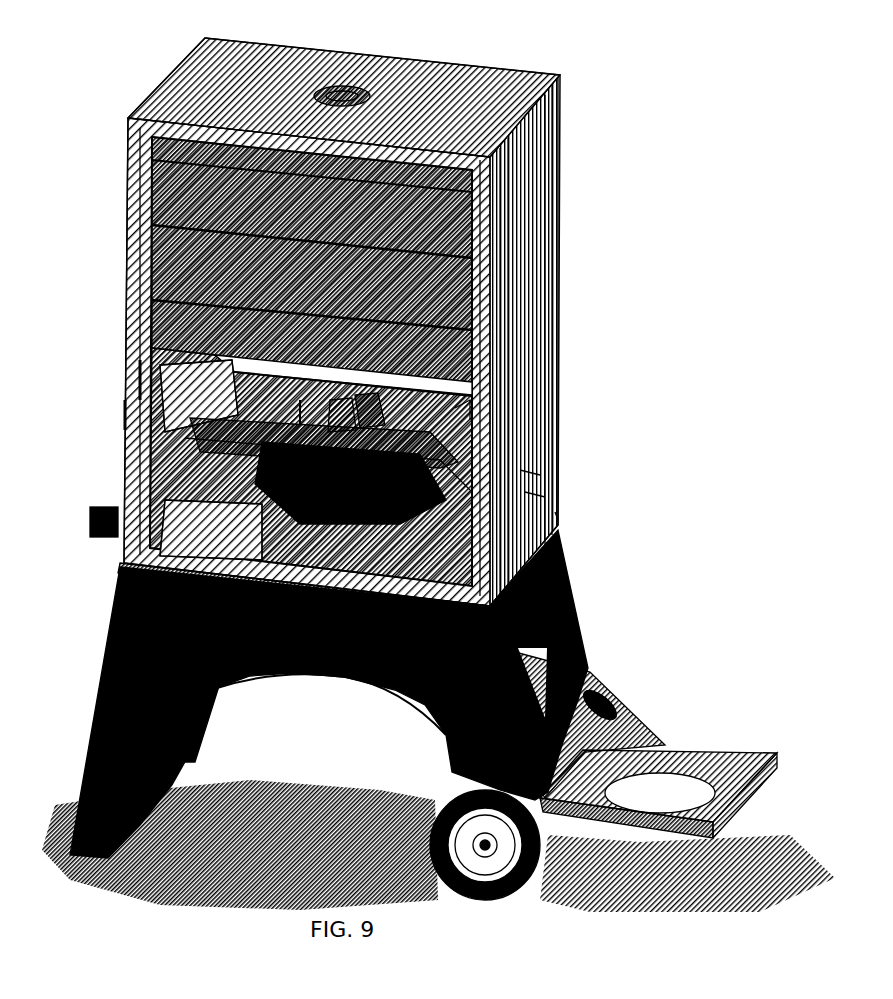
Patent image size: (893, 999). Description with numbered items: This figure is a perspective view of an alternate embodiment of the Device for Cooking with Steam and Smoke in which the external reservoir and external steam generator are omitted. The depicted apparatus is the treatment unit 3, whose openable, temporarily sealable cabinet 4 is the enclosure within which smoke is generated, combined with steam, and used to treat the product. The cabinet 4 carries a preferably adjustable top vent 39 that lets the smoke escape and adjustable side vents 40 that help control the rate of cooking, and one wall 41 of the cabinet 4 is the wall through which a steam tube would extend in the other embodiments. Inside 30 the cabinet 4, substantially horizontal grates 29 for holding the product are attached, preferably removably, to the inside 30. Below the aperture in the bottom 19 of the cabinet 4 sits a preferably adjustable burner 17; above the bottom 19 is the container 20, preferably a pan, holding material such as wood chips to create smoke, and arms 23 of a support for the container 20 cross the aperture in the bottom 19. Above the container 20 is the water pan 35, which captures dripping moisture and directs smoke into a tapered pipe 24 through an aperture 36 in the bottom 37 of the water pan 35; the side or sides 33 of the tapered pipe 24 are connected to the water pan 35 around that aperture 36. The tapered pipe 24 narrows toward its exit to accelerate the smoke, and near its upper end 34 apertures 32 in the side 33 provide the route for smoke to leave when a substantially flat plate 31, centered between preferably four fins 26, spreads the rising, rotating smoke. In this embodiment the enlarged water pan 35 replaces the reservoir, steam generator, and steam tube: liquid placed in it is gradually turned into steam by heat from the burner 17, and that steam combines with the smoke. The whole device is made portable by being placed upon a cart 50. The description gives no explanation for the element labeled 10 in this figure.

The treatment unit 3 is at (580, 103).
The cabinet 4 is at (215, 80).
The top vent 39 is at (335, 92).
The inside of the cabinet 30 is at (560, 185).
The wall of the cabinet 41 is at (132, 300).
The grate 29 is at (140, 243).
The tapered pipe 24 is at (132, 373).
The water pan 35 is at (128, 414).
The side vents 40 is at (128, 481).
The bottom of the cabinet 19 is at (124, 564).
The bottom of the water pan 37 is at (198, 396).
The arms of the support 23 is at (327, 450).
The apertures in the side of the tapered pipe 32 is at (300, 400).
The flat plate 31 is at (338, 412).
The fins 26 is at (362, 400).
The container 20 is at (211, 530).
The upper end of the tapered pipe 34 is at (556, 380).
The side of the tapered pipe 33 is at (522, 471).
The aperture in the bottom of the water pan 36 is at (527, 494).
The side shelf 10 is at (560, 540).
The cart 50 is at (232, 690).
The burner 17 is at (300, 686).